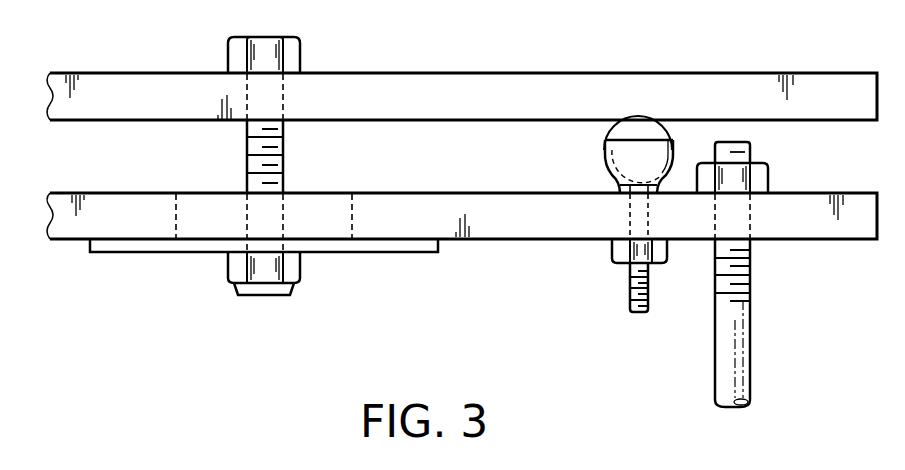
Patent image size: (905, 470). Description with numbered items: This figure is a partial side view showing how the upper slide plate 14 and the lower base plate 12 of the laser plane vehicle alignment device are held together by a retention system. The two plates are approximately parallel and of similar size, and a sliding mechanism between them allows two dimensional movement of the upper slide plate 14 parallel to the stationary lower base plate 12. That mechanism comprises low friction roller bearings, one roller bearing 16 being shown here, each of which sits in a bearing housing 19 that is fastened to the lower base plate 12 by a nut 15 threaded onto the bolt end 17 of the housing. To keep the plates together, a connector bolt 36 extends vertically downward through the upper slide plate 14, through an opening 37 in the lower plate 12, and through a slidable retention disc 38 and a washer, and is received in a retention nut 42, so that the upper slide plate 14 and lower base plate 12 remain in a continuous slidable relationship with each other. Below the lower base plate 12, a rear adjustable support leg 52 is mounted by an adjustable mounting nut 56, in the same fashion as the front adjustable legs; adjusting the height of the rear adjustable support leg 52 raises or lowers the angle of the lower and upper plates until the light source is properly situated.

The lower base plate 12 is at (120, 193).
The upper slide plate 14 is at (145, 72).
The nut 15 is at (612, 250).
The roller bearing 16 is at (597, 148).
The bolt end 17 is at (630, 306).
The bearing housing 19 is at (620, 166).
The connector bolt 36 is at (300, 45).
The opening 37 is at (352, 193).
The slidable retention disc 38 is at (438, 245).
The retention nut 42 is at (228, 270).
The rear adjustable support leg 52 is at (750, 333).
The adjustable mounting nut 56 is at (768, 177).